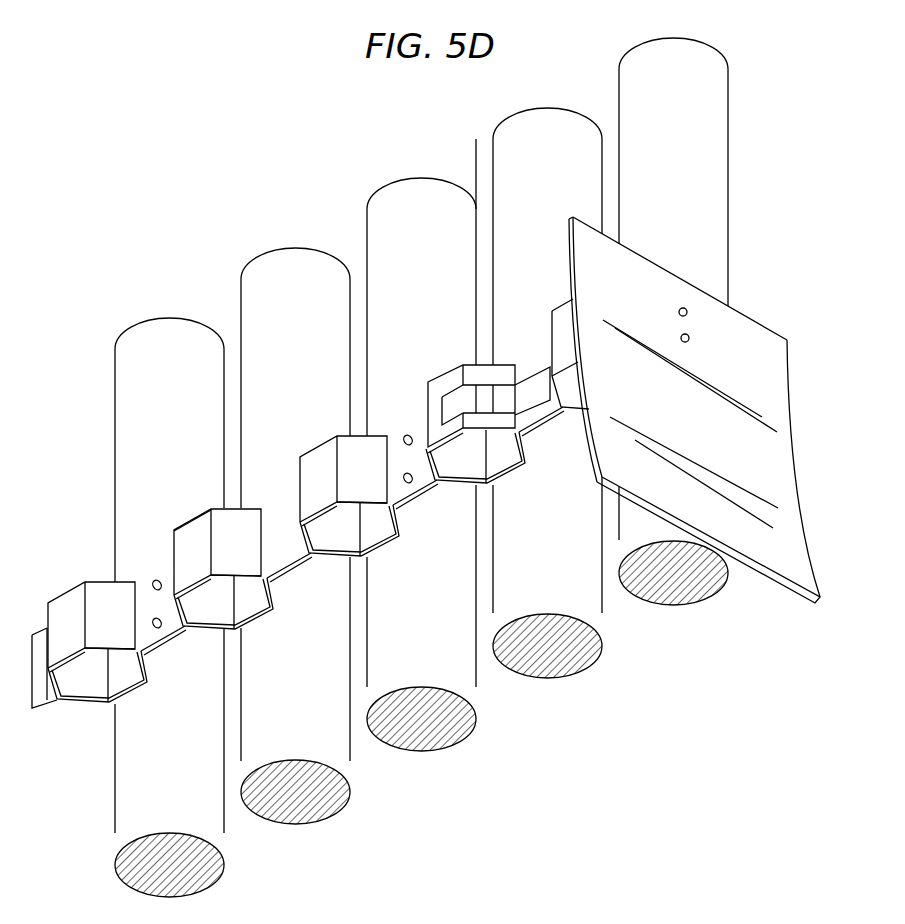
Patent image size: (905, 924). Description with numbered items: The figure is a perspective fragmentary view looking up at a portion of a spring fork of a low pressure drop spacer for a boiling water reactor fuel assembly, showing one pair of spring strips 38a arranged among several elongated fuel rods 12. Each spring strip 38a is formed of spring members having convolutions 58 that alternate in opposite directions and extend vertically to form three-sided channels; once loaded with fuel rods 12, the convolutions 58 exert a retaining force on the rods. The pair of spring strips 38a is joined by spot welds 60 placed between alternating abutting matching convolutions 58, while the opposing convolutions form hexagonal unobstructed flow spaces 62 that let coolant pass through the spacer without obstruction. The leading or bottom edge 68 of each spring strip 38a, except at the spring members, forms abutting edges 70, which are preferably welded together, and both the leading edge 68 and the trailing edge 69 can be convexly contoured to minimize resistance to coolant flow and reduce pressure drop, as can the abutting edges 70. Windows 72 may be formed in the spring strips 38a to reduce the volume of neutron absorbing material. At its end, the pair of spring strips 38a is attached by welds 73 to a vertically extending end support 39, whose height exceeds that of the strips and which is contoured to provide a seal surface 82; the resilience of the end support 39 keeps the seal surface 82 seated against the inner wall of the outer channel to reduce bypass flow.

The fuel rod 12 is at (136, 380).
The convolution 58 is at (122, 677).
The spot weld 60 is at (153, 623).
The leading edge 68 is at (182, 580).
The trailing edge 69 is at (200, 528).
The abutting edge 70 is at (45, 708).
The window 72 is at (462, 398).
The unobstructed flow space 62 is at (503, 447).
The spring strip 38a is at (283, 498).
The end support 39 is at (771, 359).
The weld 73 is at (688, 311).
The seal surface 82 is at (787, 507).